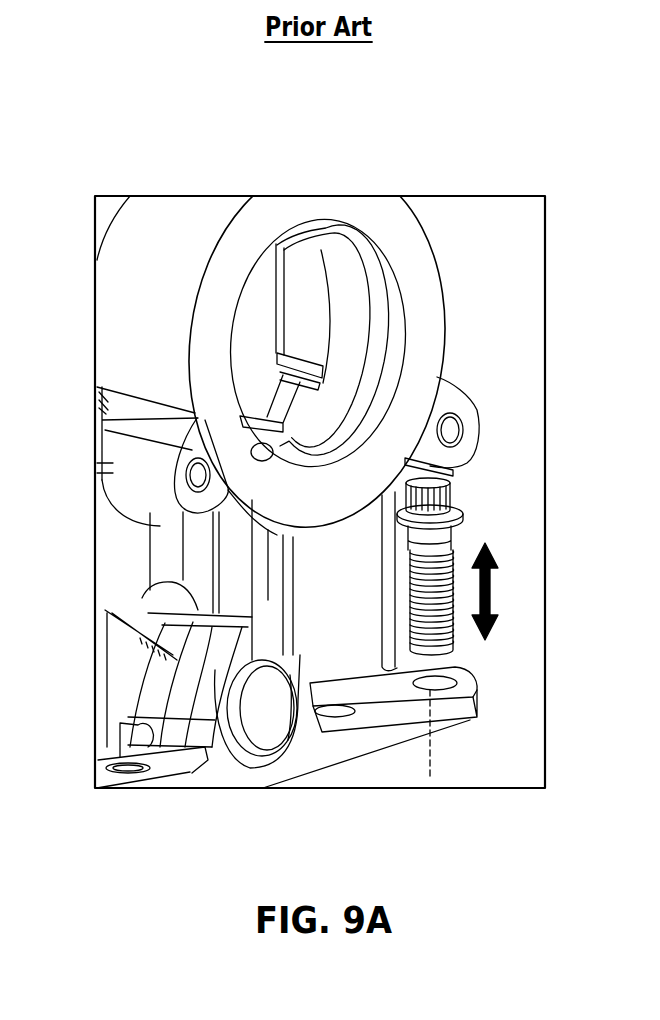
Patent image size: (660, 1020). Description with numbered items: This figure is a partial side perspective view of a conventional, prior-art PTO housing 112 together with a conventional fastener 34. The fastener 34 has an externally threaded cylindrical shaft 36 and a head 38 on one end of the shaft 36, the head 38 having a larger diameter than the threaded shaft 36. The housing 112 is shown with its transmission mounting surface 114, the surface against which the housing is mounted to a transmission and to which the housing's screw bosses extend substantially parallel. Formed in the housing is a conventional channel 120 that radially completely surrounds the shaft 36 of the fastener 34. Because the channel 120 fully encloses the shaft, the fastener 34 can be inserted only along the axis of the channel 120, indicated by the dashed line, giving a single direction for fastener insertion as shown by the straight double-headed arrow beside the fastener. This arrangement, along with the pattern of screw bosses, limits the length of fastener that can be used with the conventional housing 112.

The conventional PTO housing 112 is at (428, 234).
The head 38 is at (453, 498).
The conventional fastener 34 is at (450, 567).
The externally threaded cylindrical shaft 36 is at (450, 593).
The transmission mounting surface 114 is at (362, 757).
The conventional channel 120 is at (427, 687).